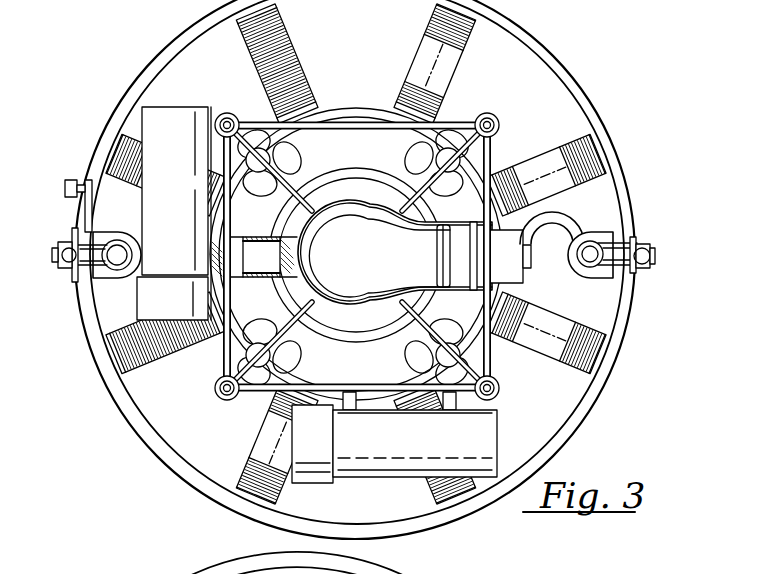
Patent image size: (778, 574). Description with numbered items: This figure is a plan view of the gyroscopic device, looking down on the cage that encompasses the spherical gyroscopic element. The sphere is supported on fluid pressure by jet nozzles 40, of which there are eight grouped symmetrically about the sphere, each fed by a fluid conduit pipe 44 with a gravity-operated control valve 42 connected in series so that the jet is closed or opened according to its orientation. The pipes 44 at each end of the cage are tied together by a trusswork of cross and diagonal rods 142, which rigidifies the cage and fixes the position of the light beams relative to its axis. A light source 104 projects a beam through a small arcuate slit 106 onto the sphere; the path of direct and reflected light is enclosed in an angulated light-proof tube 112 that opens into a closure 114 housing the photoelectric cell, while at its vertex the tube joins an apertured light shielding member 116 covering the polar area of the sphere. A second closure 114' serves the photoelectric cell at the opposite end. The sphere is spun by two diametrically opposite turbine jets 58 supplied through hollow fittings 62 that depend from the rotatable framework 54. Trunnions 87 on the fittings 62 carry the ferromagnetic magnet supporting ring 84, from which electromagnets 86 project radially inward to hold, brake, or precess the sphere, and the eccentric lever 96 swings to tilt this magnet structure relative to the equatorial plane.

The jet nozzle 40 is at (463, 157).
The control valve 42 is at (445, 178).
The fluid conduit pipe 44 is at (499, 125).
The framework 54 is at (90, 266).
The turbine jet 58 is at (530, 236).
The hollow fitting 62 is at (108, 232).
The magnet supporting ring 84 is at (572, 78).
The electromagnet 86 is at (427, 42).
The trunnion 87 is at (656, 253).
The eccentric lever 96 is at (85, 212).
The light source 104 is at (414, 252).
The arcuate slit 106 is at (330, 247).
The light-proof tube 112 is at (247, 237).
The closure 114 is at (174, 213).
The closure 114' is at (394, 437).
The light shielding member 116 is at (288, 290).
The cross and diagonal rods 142 is at (338, 121).